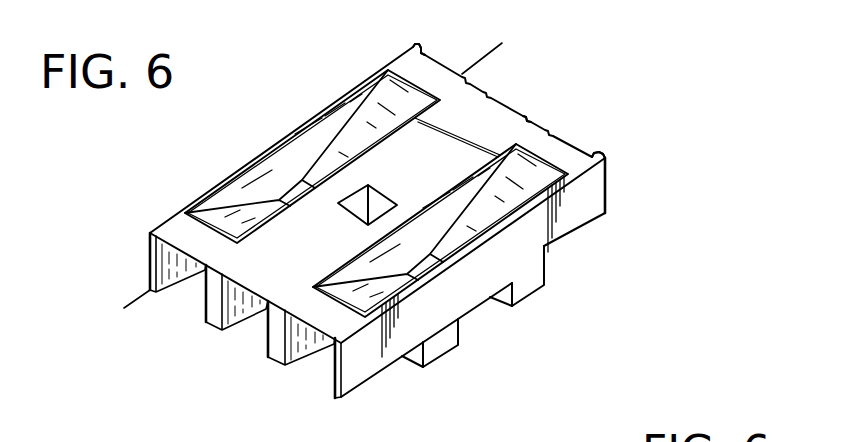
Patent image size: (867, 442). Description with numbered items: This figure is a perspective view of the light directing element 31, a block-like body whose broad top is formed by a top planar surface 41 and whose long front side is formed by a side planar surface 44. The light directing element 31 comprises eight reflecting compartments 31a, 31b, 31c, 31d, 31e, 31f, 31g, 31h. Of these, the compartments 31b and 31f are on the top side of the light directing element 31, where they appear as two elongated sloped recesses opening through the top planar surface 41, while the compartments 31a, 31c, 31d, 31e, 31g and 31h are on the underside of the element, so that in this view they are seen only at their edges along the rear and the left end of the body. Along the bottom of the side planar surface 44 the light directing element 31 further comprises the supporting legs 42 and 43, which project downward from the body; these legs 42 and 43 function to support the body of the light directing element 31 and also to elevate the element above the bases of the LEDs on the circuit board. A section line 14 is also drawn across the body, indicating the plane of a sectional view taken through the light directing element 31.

The light directing element 31 is at (604, 48).
The reflecting compartment 31a is at (186, 302).
The reflecting compartment 31b is at (299, 160).
The reflecting compartment 31c is at (446, 46).
The reflecting compartment 31d is at (530, 92).
The reflecting compartment 31e is at (596, 128).
The reflecting compartment 31f is at (491, 221).
The reflecting compartment 31g is at (315, 377).
The reflecting compartment 31h is at (252, 340).
The top planar surface 41 is at (428, 177).
The supporting leg 42 is at (440, 343).
The supporting leg 43 is at (523, 292).
The side planar surface 44 is at (486, 296).
The section line 14- 14 is at (144, 321).